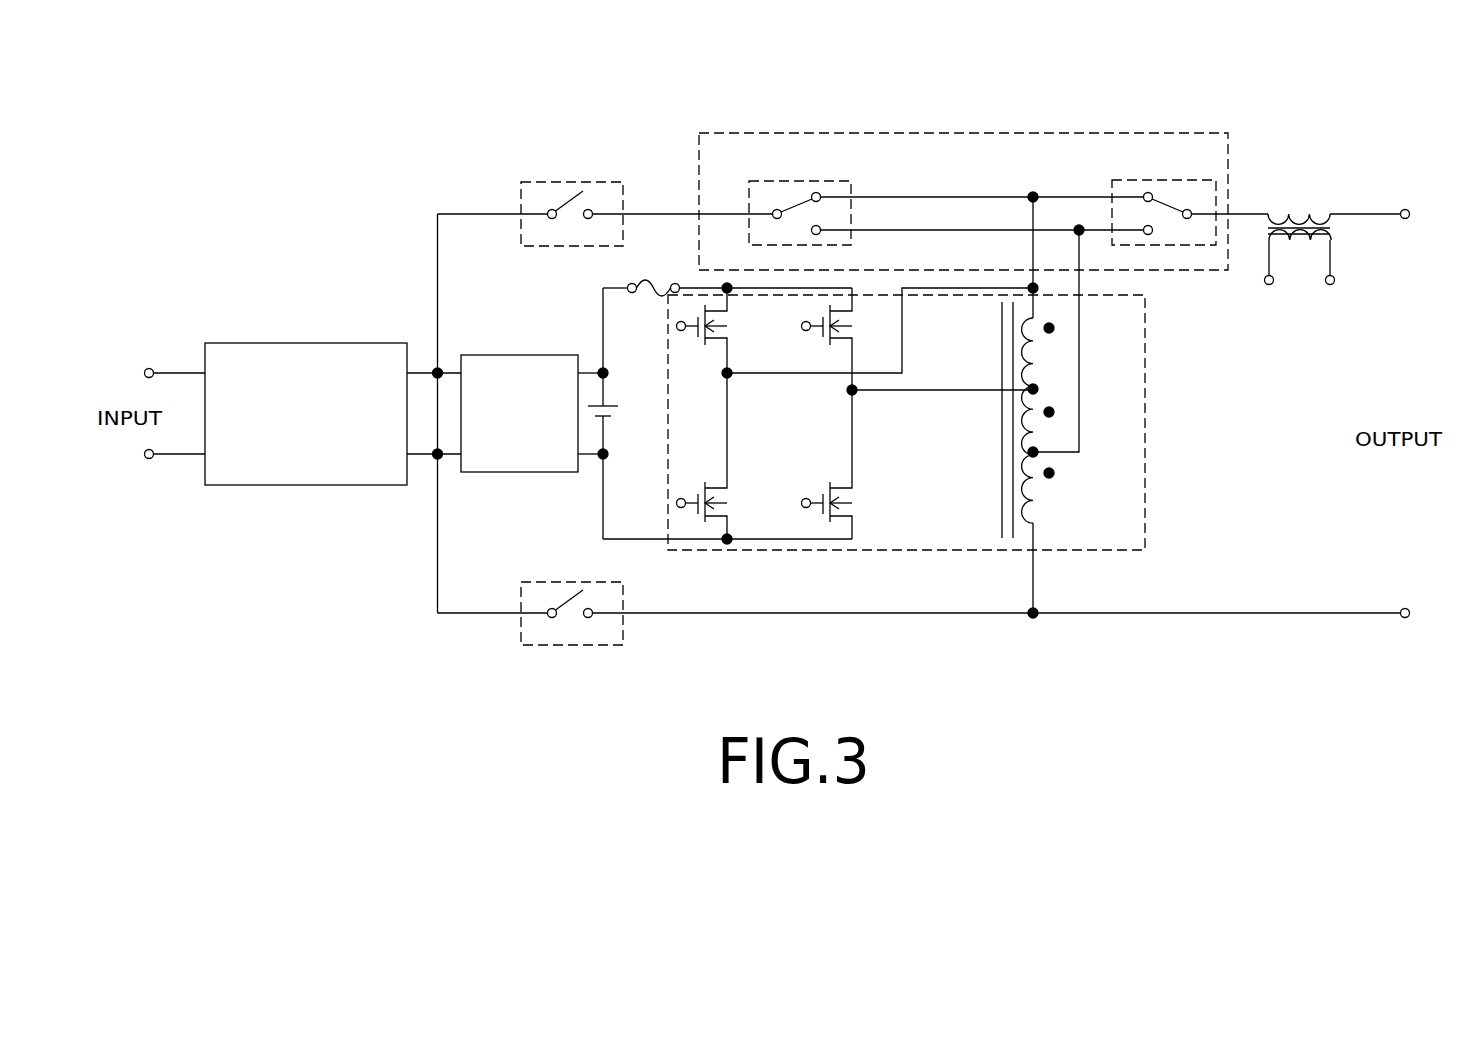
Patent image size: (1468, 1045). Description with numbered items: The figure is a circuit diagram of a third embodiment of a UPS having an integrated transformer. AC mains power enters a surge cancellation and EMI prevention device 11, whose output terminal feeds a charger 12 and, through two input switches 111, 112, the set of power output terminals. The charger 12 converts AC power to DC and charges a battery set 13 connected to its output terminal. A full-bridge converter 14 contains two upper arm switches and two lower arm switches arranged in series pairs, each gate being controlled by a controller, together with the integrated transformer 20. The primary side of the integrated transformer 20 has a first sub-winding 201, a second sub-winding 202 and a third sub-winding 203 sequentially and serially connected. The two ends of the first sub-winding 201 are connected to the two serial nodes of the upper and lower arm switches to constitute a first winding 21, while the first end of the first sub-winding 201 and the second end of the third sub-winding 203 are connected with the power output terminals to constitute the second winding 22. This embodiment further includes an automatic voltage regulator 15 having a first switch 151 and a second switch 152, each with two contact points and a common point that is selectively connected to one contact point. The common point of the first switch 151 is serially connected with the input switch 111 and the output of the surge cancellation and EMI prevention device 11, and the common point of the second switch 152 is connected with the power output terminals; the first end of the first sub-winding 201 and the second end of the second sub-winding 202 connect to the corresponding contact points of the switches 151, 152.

The surge cancellation and EMI prevention device 11 is at (288, 486).
The charger 12 is at (497, 473).
The battery set 13 is at (613, 430).
The full-bridge converter 14 is at (845, 550).
The automatic voltage regulator 15 is at (963, 179).
The integrated transformer 20 is at (1059, 405).
The first winding 21 is at (986, 420).
The second winding 22 is at (1116, 424).
The input switch 111 is at (553, 182).
The input switch 112 is at (543, 645).
The first switch 151 is at (780, 181).
The second switch 152 is at (1135, 180).
The first sub-winding 201 is at (1076, 352).
The second sub-winding 202 is at (1076, 420).
The third sub-winding 203 is at (1076, 489).